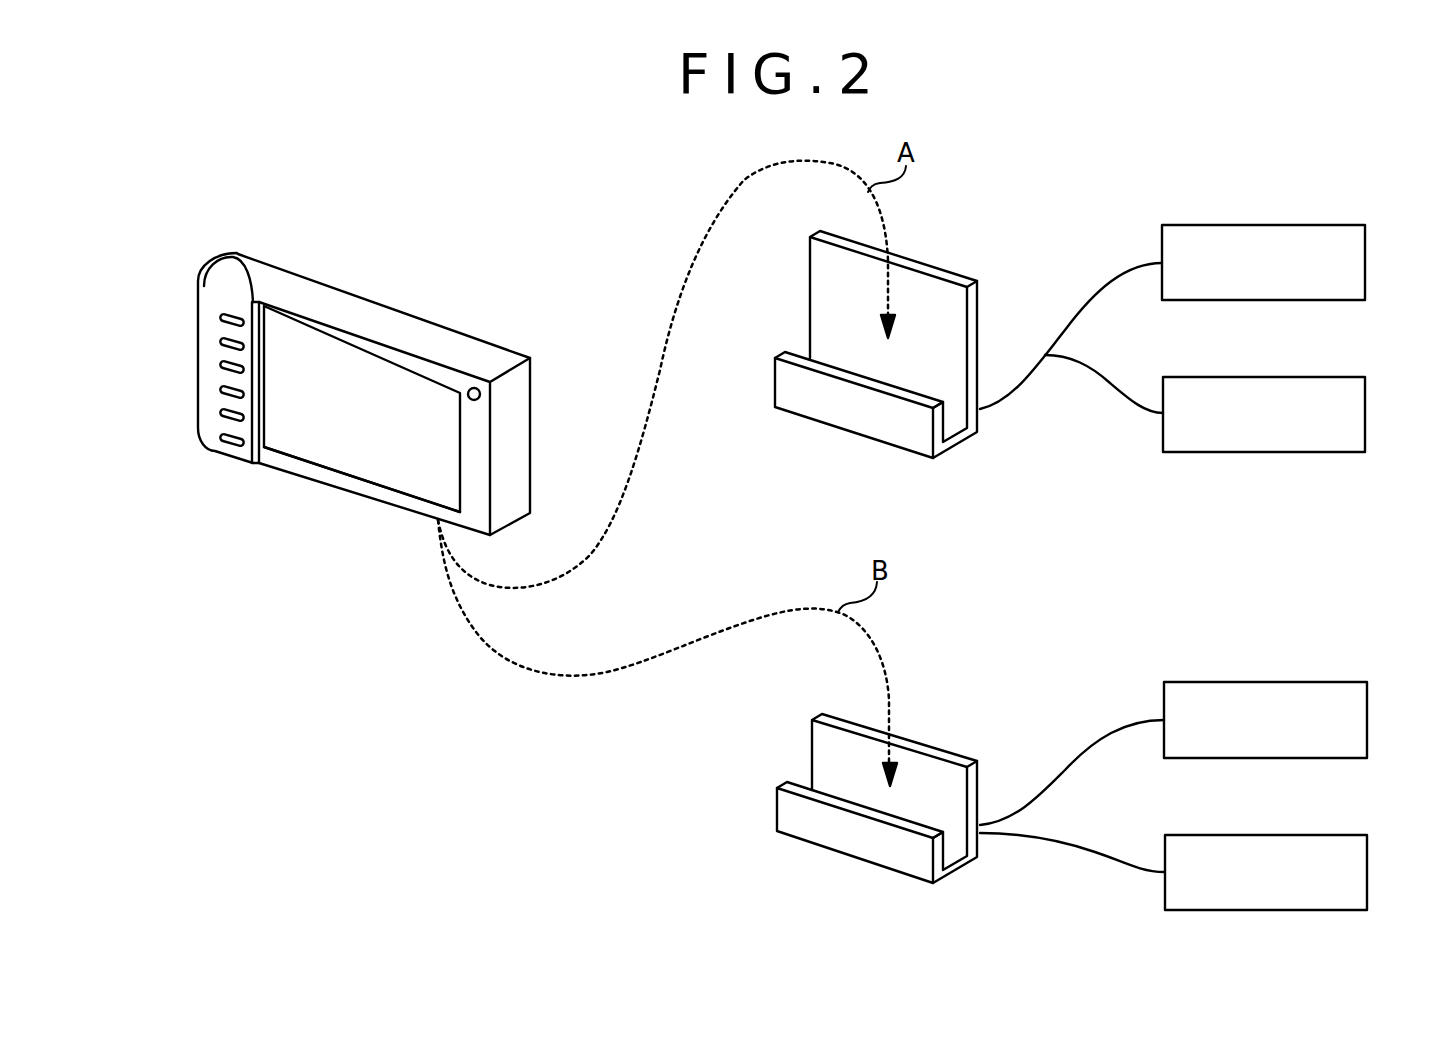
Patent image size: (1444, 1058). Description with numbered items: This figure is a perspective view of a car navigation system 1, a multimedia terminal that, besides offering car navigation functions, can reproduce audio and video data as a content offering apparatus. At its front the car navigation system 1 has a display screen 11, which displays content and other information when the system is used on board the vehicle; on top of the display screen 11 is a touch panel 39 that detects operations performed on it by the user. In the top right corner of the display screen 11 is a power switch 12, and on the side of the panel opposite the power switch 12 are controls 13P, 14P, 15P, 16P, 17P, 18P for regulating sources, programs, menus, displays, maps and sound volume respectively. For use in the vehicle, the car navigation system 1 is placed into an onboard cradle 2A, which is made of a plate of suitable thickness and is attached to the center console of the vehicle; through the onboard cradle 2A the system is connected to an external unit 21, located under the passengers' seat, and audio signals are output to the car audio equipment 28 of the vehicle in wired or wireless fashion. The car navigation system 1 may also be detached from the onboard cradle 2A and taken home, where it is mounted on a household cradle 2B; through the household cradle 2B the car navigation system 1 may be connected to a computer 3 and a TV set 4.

The car navigation system 1 is at (438, 333).
The display screen 11 is at (347, 373).
The power switch 12 is at (481, 392).
The touch panel 39 is at (343, 462).
The control 13P is at (221, 318).
The control 14P is at (221, 342).
The control 15P is at (221, 365).
The control 16P is at (221, 390).
The control 17P is at (221, 413).
The control 18P is at (221, 438).
The onboard cradle 2A is at (935, 293).
The household cradle 2B is at (937, 777).
The external unit 21 is at (1366, 253).
The car audio equipment 28 is at (1366, 405).
The TV set 4 is at (1367, 708).
The computer 3 is at (1368, 861).